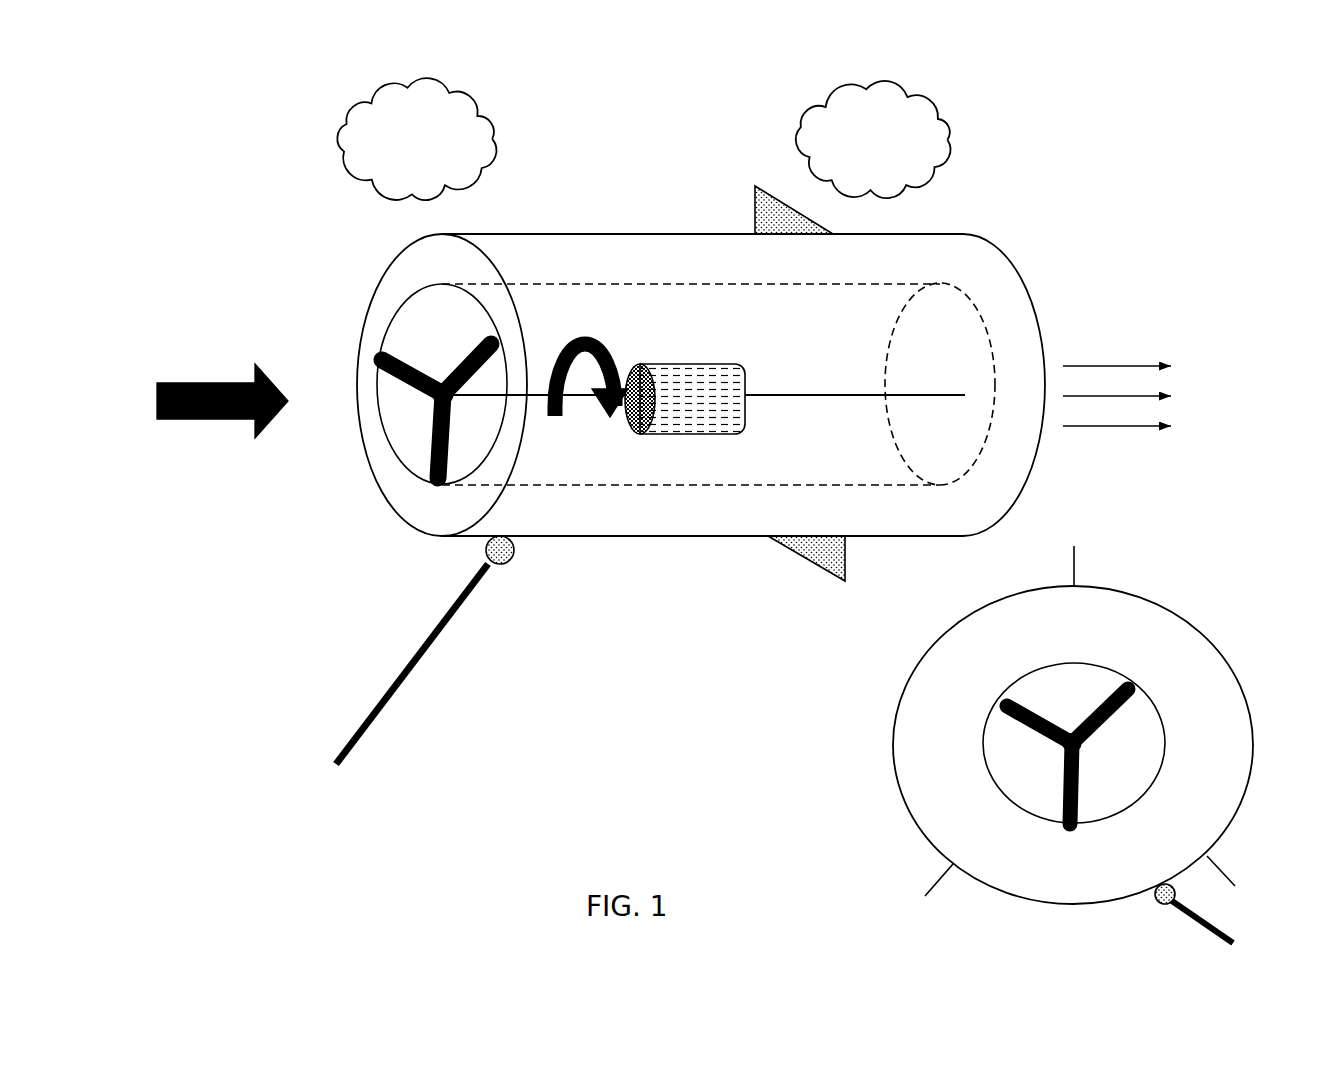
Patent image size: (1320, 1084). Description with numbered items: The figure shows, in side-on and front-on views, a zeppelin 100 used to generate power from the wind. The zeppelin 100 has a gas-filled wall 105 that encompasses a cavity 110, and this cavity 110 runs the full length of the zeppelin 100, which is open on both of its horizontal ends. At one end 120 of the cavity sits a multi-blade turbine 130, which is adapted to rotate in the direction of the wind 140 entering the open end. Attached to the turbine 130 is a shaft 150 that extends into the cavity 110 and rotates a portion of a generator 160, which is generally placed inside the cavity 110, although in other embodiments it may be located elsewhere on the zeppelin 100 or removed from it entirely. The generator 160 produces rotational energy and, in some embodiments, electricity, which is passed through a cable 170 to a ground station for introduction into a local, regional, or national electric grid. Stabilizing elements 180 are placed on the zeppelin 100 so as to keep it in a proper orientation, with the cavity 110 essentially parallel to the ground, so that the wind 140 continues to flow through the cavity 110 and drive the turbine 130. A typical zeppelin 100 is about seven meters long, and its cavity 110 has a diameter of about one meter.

The zeppelin 100 is at (295, 255).
The gas-filled wall 105 is at (425, 505).
The cavity 110 is at (815, 452).
The end 120 is at (405, 333).
The multi-blade turbine 130 is at (425, 423).
The wind 140 is at (207, 425).
The shaft 150 is at (537, 393).
The generator 160 is at (674, 362).
The cable 170 is at (825, 393).
The stabilizing elements 180 is at (755, 192).